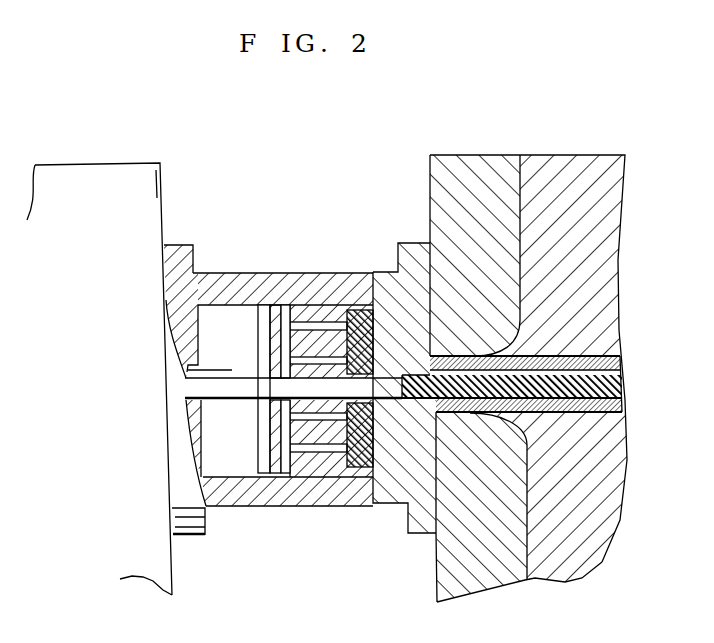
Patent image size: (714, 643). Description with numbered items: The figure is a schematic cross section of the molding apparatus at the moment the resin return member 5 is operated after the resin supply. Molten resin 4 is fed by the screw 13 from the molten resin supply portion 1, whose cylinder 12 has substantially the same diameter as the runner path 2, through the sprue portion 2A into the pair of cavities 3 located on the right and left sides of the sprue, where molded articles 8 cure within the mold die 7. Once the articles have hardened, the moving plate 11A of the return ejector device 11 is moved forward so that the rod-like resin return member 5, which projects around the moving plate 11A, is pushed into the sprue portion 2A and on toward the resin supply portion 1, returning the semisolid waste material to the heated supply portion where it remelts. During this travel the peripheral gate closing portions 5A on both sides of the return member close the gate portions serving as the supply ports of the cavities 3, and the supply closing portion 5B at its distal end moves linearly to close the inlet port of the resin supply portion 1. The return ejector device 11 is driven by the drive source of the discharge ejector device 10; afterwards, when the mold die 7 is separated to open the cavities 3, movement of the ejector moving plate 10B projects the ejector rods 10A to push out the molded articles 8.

The molten resin supply portion 1 is at (565, 340).
The molten-resin runner path 2 is at (418, 536).
The sprue portion 2A is at (408, 374).
The cavities 3 is at (356, 302).
The molten resin 4 is at (447, 414).
The resin return member 5 is at (185, 398).
The gate closing portions 5A is at (343, 316).
The supply closing portion 5B is at (383, 508).
The mold die 7 is at (163, 196).
The molded article 8 is at (376, 306).
The discharge ejector device 10 is at (248, 456).
The ejector rods 10A is at (298, 303).
The ejector moving plate 10B is at (262, 508).
The return ejector device 11 is at (253, 353).
The moving plate 11A is at (186, 372).
The cylinder 12 is at (628, 410).
The screw 13 is at (628, 375).